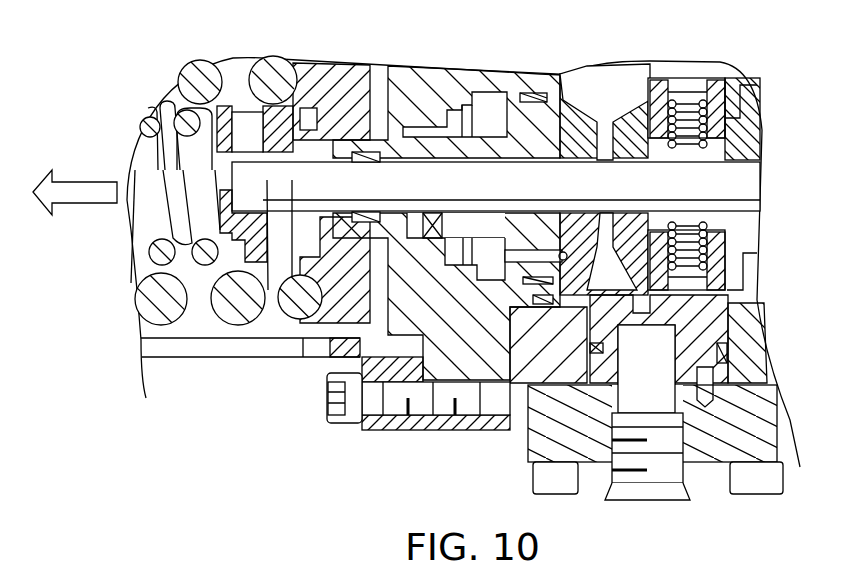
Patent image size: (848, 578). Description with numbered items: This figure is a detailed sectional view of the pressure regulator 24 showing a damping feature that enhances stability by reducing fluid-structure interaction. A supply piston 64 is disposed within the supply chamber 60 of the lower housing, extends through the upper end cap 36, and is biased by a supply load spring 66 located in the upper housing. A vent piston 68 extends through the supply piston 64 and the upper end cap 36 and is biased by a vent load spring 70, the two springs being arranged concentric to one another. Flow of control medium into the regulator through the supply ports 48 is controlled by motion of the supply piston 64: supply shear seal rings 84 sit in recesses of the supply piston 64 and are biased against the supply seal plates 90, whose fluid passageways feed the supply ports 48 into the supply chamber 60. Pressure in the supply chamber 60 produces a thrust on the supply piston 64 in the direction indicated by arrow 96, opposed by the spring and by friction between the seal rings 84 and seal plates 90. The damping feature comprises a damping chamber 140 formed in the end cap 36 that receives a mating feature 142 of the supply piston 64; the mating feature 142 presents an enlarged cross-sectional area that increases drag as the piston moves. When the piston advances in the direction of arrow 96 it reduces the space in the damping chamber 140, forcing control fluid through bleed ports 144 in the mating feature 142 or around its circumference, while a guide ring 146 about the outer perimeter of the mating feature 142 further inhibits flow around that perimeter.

The pressure regulator 24 is at (118, 66).
The upper end cap 36 is at (405, 82).
The supply ports 48 is at (663, 477).
The supply chamber 60 is at (603, 87).
The supply piston 64 is at (347, 143).
The supply load spring 66 is at (197, 78).
The vent piston 68 is at (240, 185).
The vent load spring 70 is at (204, 262).
The supply shear seal rings 84 is at (718, 127).
The supply seal plates 90 is at (692, 63).
The arrow 96 is at (62, 182).
The damping chamber 140 is at (485, 98).
The mating feature 142 is at (518, 112).
The bleed ports 144 is at (525, 253).
The guide ring 146 is at (540, 64).